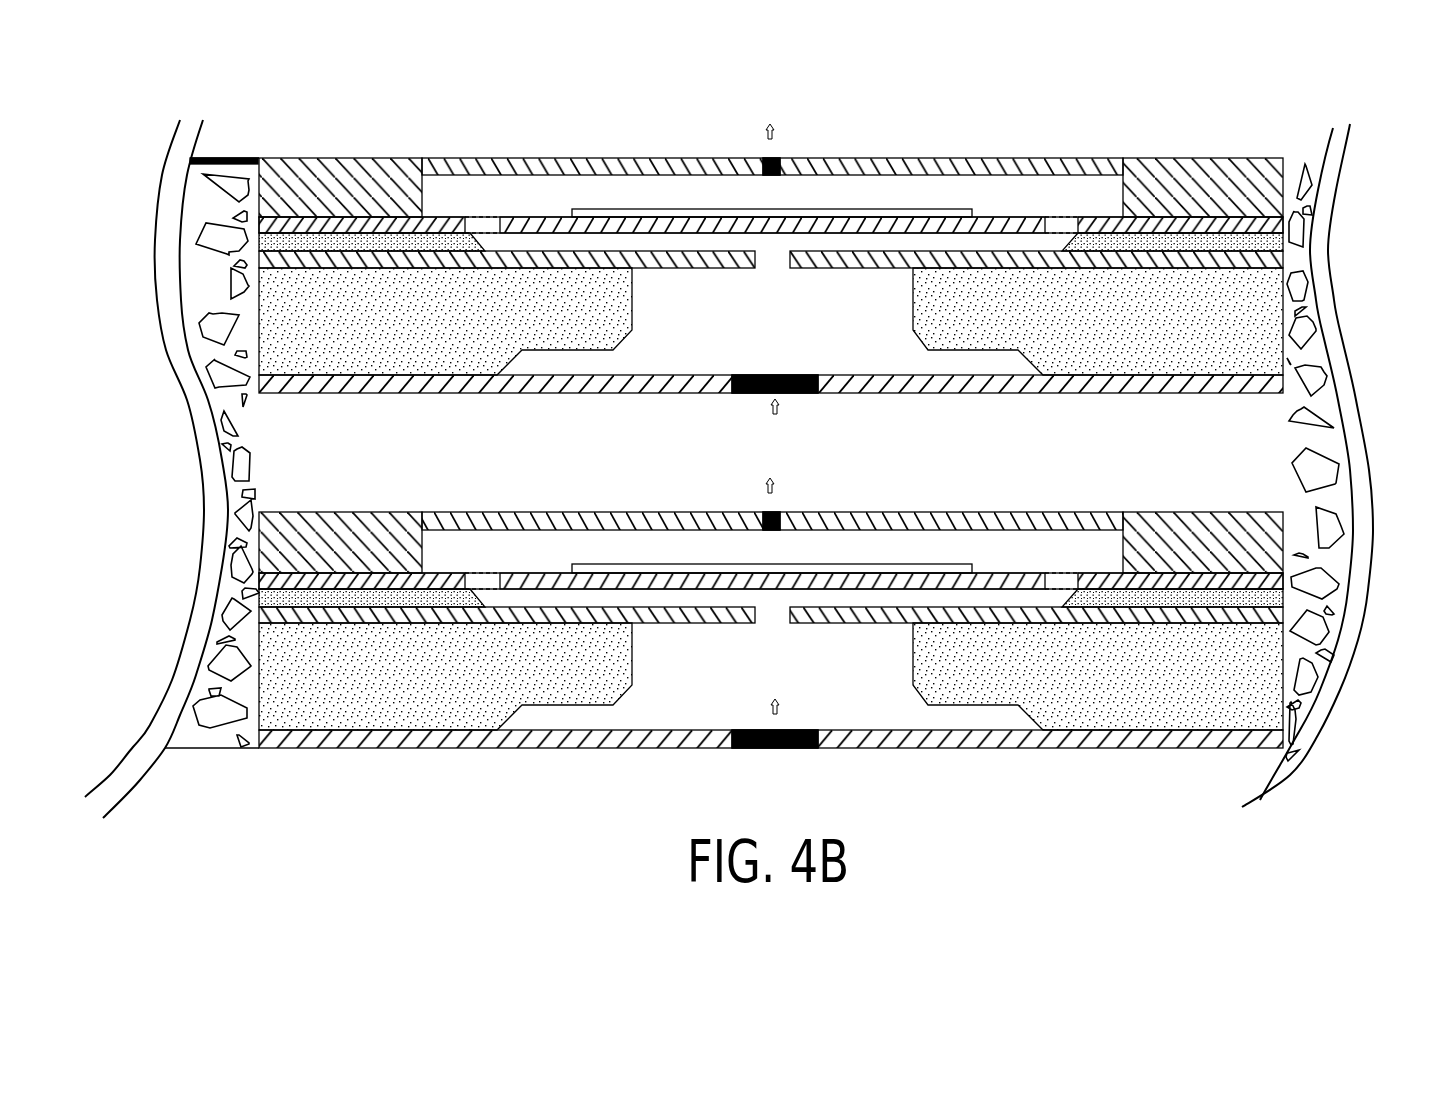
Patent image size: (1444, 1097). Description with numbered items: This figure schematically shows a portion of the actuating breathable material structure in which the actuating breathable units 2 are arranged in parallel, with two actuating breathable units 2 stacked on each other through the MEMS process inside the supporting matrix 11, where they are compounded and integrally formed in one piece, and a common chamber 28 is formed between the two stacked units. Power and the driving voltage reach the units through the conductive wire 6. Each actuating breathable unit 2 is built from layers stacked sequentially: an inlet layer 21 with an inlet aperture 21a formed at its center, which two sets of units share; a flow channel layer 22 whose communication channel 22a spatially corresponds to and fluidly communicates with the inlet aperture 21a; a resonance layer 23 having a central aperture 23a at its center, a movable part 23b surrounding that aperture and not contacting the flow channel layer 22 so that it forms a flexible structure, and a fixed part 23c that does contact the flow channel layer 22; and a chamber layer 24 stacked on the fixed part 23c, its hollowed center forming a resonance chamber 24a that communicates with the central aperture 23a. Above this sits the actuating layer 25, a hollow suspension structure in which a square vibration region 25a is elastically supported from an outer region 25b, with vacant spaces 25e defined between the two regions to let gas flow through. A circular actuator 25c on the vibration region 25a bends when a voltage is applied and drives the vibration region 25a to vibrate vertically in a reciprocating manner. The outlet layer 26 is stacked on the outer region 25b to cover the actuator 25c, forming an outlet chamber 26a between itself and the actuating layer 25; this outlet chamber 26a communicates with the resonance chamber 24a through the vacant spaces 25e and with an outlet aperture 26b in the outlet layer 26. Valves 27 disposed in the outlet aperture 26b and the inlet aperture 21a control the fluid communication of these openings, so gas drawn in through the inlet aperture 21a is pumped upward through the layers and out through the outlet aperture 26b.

The actuating breathable unit 2 is at (1182, 130).
The conductive wire 6 is at (254, 152).
The supporting matrix 11 is at (242, 156).
The inlet layer 21 is at (270, 383).
The inlet aperture 21a is at (808, 393).
The flow channel layer 22 is at (280, 332).
The communication channel 22a is at (703, 332).
The resonance layer 23 is at (270, 258).
The central aperture 23a is at (773, 262).
The movable part 23b is at (687, 260).
The fixed part 23c is at (410, 262).
The chamber layer 24 is at (272, 242).
The resonance chamber 24a is at (953, 238).
The actuating layer 25 is at (275, 224).
The vibration region 25a is at (980, 217).
The outer region 25b is at (385, 210).
The actuator 25c is at (580, 215).
The vacant space 25e is at (483, 220).
The outlet layer 26 is at (1263, 185).
The outlet chamber 26a is at (678, 207).
The outlet aperture 26b is at (772, 157).
The valve 27 is at (768, 157).
The common chamber 28 is at (1255, 429).